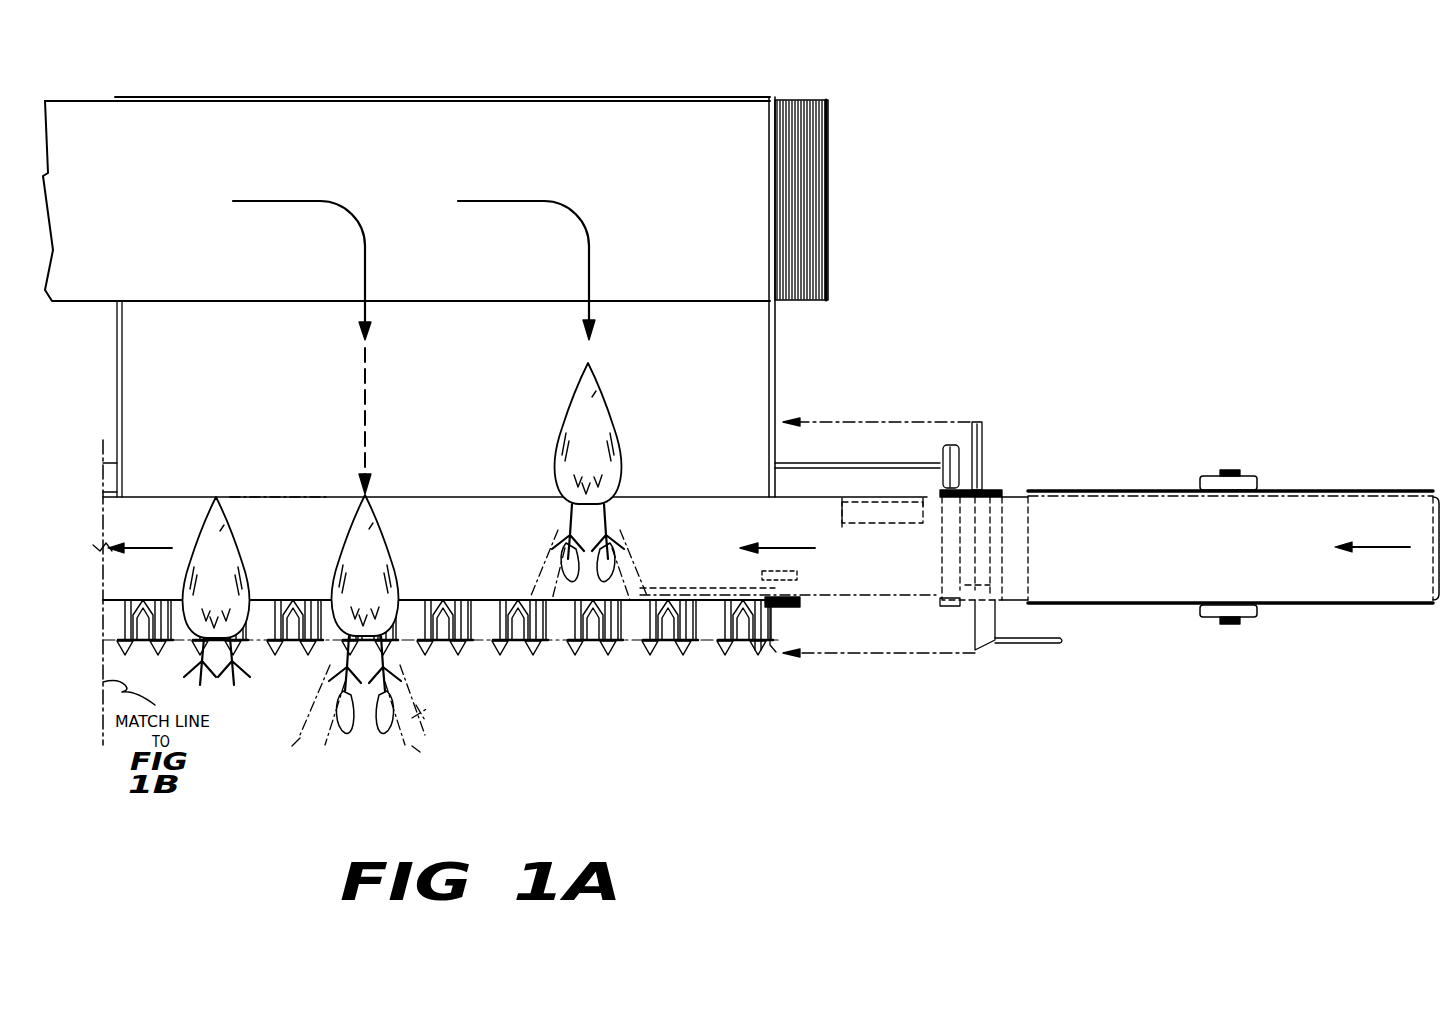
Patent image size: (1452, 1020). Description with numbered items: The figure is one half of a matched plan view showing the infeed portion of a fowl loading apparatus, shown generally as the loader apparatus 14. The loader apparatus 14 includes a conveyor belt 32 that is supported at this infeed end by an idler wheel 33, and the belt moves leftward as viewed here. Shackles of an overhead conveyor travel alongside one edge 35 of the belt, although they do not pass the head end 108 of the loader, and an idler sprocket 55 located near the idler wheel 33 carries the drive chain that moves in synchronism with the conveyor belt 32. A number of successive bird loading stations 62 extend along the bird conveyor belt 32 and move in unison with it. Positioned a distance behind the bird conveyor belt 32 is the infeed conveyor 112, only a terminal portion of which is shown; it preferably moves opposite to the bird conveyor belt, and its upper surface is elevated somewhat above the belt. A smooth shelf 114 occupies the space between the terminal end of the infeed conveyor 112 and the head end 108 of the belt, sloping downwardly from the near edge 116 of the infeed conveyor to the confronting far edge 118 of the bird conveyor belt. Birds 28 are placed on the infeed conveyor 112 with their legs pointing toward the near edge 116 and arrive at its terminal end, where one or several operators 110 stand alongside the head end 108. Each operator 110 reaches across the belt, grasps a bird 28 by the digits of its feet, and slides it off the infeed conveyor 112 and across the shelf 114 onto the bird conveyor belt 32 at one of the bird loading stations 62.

The loader apparatus 14 is at (1167, 313).
The bird 28 is at (232, 553).
The conveyor belt 32 is at (432, 502).
The idler wheel 33 is at (1297, 489).
The edge of the belt 35 is at (830, 606).
The idler sprocket 55 is at (680, 593).
The bird loading stations 62 is at (487, 703).
The head end 108 is at (1062, 423).
The operators 110 is at (540, 578).
The infeed conveyor 112 is at (443, 117).
The shelf 114 is at (430, 312).
The near edge 116 is at (682, 300).
The far edge 118 is at (678, 493).